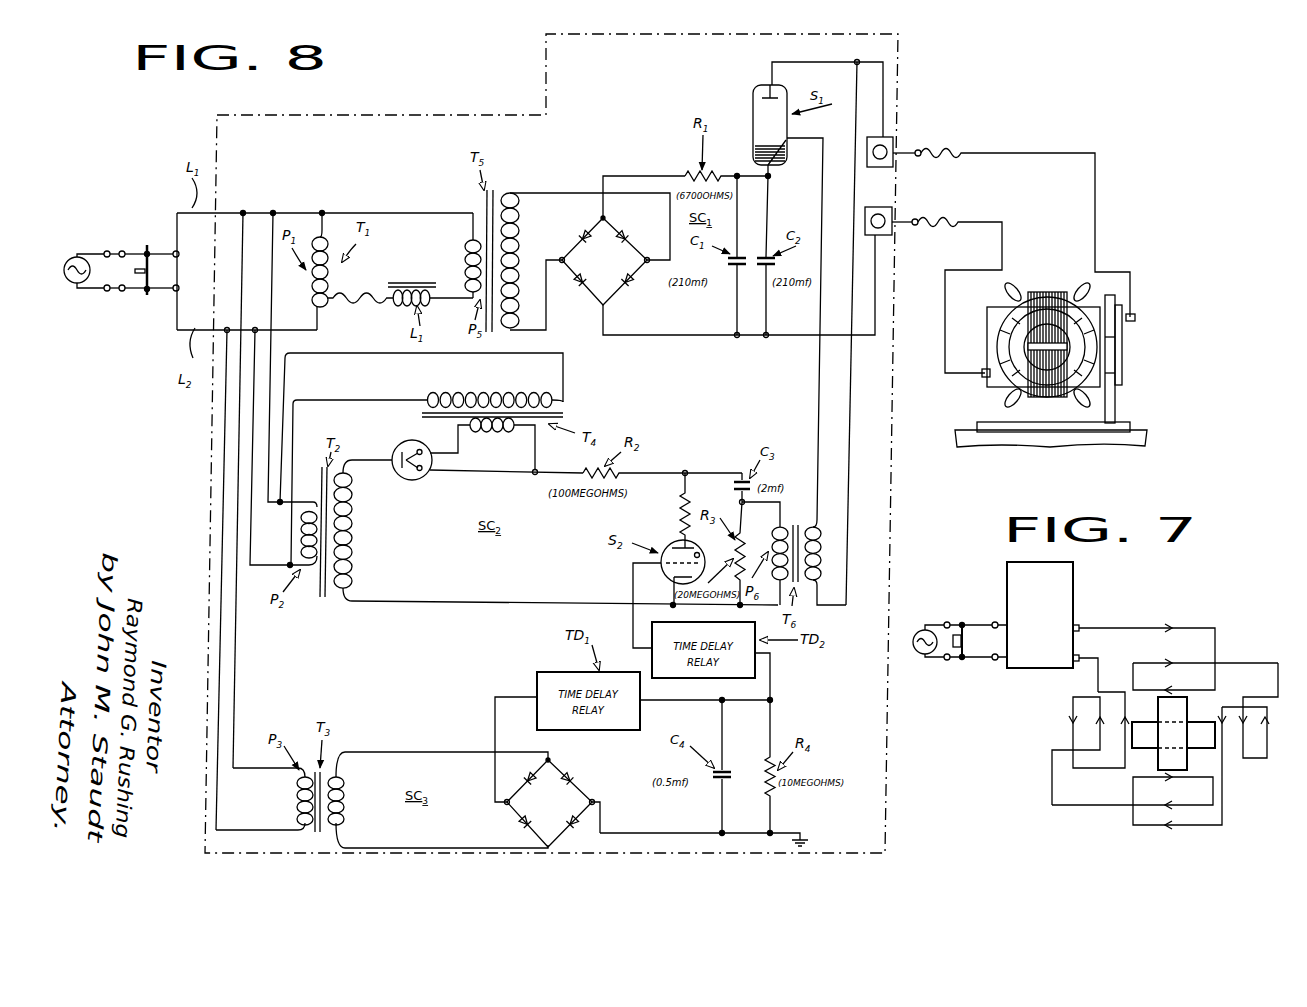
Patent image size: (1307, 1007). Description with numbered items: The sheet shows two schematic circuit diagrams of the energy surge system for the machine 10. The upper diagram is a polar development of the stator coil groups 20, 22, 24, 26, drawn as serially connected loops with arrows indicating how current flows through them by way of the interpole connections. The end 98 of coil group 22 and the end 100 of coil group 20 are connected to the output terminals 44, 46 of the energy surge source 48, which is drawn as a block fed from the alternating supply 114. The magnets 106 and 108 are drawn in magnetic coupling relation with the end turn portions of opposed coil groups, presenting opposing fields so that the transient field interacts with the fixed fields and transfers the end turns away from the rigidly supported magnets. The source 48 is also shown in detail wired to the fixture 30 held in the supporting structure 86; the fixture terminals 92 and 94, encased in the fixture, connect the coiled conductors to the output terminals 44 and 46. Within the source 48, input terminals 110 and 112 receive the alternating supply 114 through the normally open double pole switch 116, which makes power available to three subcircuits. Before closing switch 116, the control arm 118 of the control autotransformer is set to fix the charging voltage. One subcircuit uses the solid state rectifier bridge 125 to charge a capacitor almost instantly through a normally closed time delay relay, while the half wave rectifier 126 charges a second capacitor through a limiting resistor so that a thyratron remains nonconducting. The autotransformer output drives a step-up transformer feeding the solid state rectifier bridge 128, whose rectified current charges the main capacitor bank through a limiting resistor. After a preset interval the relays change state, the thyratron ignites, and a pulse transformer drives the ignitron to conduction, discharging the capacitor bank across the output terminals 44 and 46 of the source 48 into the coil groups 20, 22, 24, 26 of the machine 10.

In FIG. 8, the motor 10 is at (1044, 400).
In FIG. 8, the stator coil group 20 is at (1008, 293).
In FIG. 7, the stator coil group 20 is at (1210, 624).
In FIG. 7, the stator coil group 22 is at (1068, 733).
In FIG. 8, the stator coil group 24 is at (1012, 398).
In FIG. 7, the stator coil group 24 is at (1197, 829).
In FIG. 8, the stator coil group 26 is at (1000, 382).
In FIG. 7, the stator coil group 26 is at (1274, 745).
In FIG. 8, the fixture 30 is at (985, 310).
In FIG. 8, the source output terminal 44 is at (919, 150).
In FIG. 7, the source output terminal 44 is at (1080, 627).
In FIG. 8, the source output terminal 46 is at (916, 219).
In FIG. 7, the source output terminal 46 is at (1080, 658).
In FIG. 8, the energy surge source 48 is at (905, 91).
In FIG. 7, the energy surge source 48 is at (1080, 584).
In FIG. 8, the supporting structure 86 is at (1118, 400).
In FIG. 8, the terminal 92 is at (1137, 316).
In FIG. 8, the terminal 94 is at (981, 371).
In FIG. 7, the coil group end 98 is at (1088, 665).
In FIG. 7, the coil group end 100 is at (1146, 627).
In FIG. 7, the magnet 106 is at (1197, 728).
In FIG. 7, the magnet 108 is at (1160, 757).
In FIG. 8, the input terminal 110 is at (146, 252).
In FIG. 8, the input terminal 112 is at (145, 292).
In FIG. 8, the alternating supply 114 is at (72, 286).
In FIG. 8, the normally open switch 116 is at (151, 248).
In FIG. 8, the control arm 118 is at (343, 302).
In FIG. 8, the solid state rectifier bridge 125 is at (575, 781).
In FIG. 8, the half wave rectifier 126 is at (411, 484).
In FIG. 8, the solid state rectifier bridge 128 is at (624, 290).